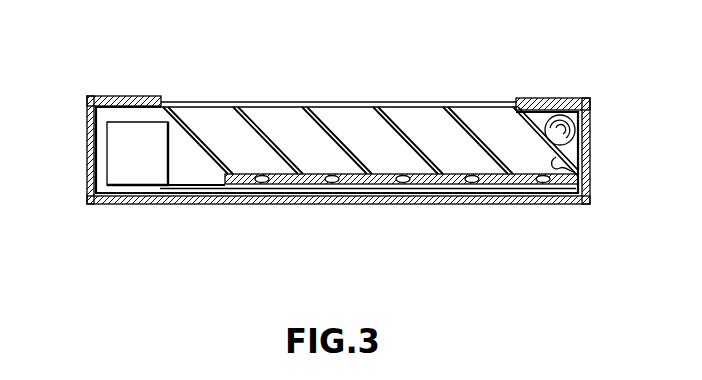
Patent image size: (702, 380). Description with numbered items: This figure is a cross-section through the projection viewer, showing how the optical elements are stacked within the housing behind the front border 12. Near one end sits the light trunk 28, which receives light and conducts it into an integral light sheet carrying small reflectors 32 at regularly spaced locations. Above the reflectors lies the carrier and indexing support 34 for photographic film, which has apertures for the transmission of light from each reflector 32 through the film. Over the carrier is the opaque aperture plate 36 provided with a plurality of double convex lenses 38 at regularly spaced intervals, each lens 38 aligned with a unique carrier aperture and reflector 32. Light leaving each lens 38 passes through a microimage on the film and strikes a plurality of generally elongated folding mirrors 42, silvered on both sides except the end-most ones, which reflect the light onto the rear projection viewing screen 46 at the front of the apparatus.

The border 12 is at (110, 97).
The light trunk 28 is at (566, 129).
The reflectors 32 is at (265, 191).
The carrier and indexing support 34 is at (127, 160).
The opaque aperture plate 36 is at (426, 185).
The lenses 38 is at (340, 187).
The folding mirrors 42 is at (188, 128).
The viewing screen 46 is at (408, 102).